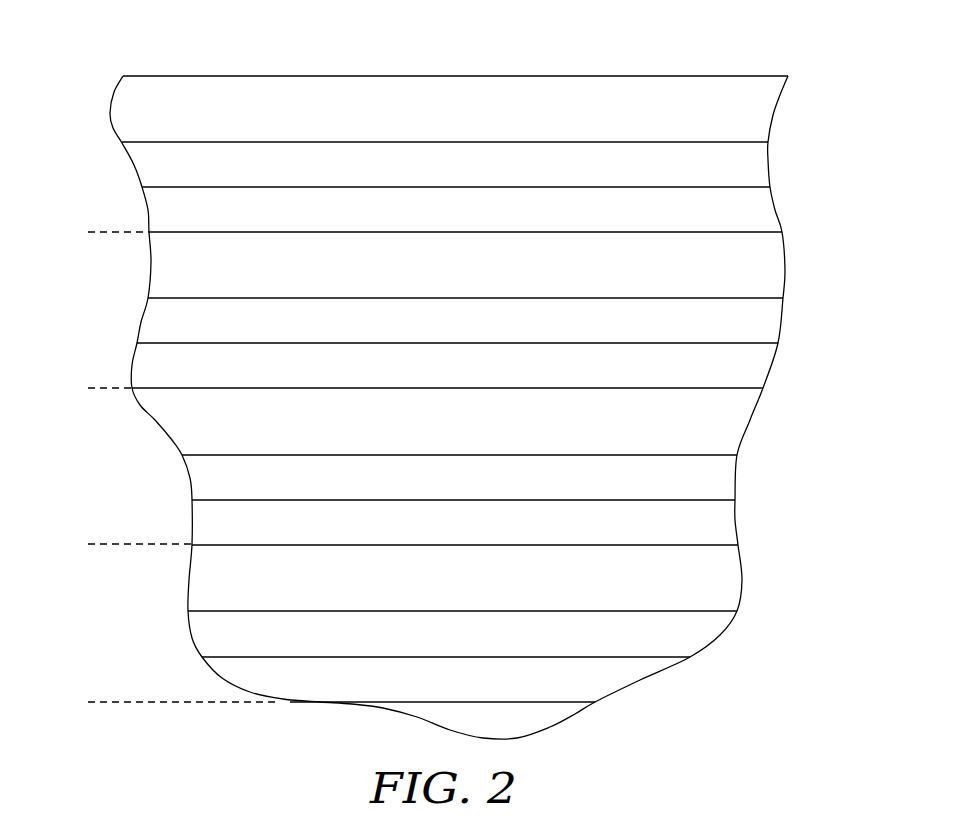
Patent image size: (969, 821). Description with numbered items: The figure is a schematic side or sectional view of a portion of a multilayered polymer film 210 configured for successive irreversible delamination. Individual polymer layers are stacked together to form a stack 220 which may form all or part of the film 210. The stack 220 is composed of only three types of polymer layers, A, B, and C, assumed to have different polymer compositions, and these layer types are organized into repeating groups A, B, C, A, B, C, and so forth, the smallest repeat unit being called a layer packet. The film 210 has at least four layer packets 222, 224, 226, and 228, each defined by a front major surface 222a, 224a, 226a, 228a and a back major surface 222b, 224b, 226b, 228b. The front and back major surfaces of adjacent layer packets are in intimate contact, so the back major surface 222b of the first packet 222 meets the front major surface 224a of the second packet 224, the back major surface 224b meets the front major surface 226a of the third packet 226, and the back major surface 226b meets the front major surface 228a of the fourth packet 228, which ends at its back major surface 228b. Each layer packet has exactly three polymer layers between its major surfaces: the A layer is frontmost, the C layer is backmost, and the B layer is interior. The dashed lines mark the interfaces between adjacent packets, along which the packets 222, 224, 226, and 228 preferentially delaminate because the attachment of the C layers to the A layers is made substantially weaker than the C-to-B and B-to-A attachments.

The multilayered polymer film 210 is at (128, 30).
The stack 220 is at (817, 755).
The layer packet 222 is at (88, 78).
The layer packet 224 is at (88, 234).
The layer packet 226 is at (88, 390).
The layer packet 228 is at (88, 546).
The front major surface 222a is at (543, 76).
The back major surface 222b is at (465, 164).
The front major surface 224a is at (653, 232).
The back major surface 224b is at (447, 319).
The front major surface 226a is at (547, 388).
The back major surface 226b is at (465, 478).
The front major surface 228a is at (650, 545).
The back major surface 228b is at (526, 702).